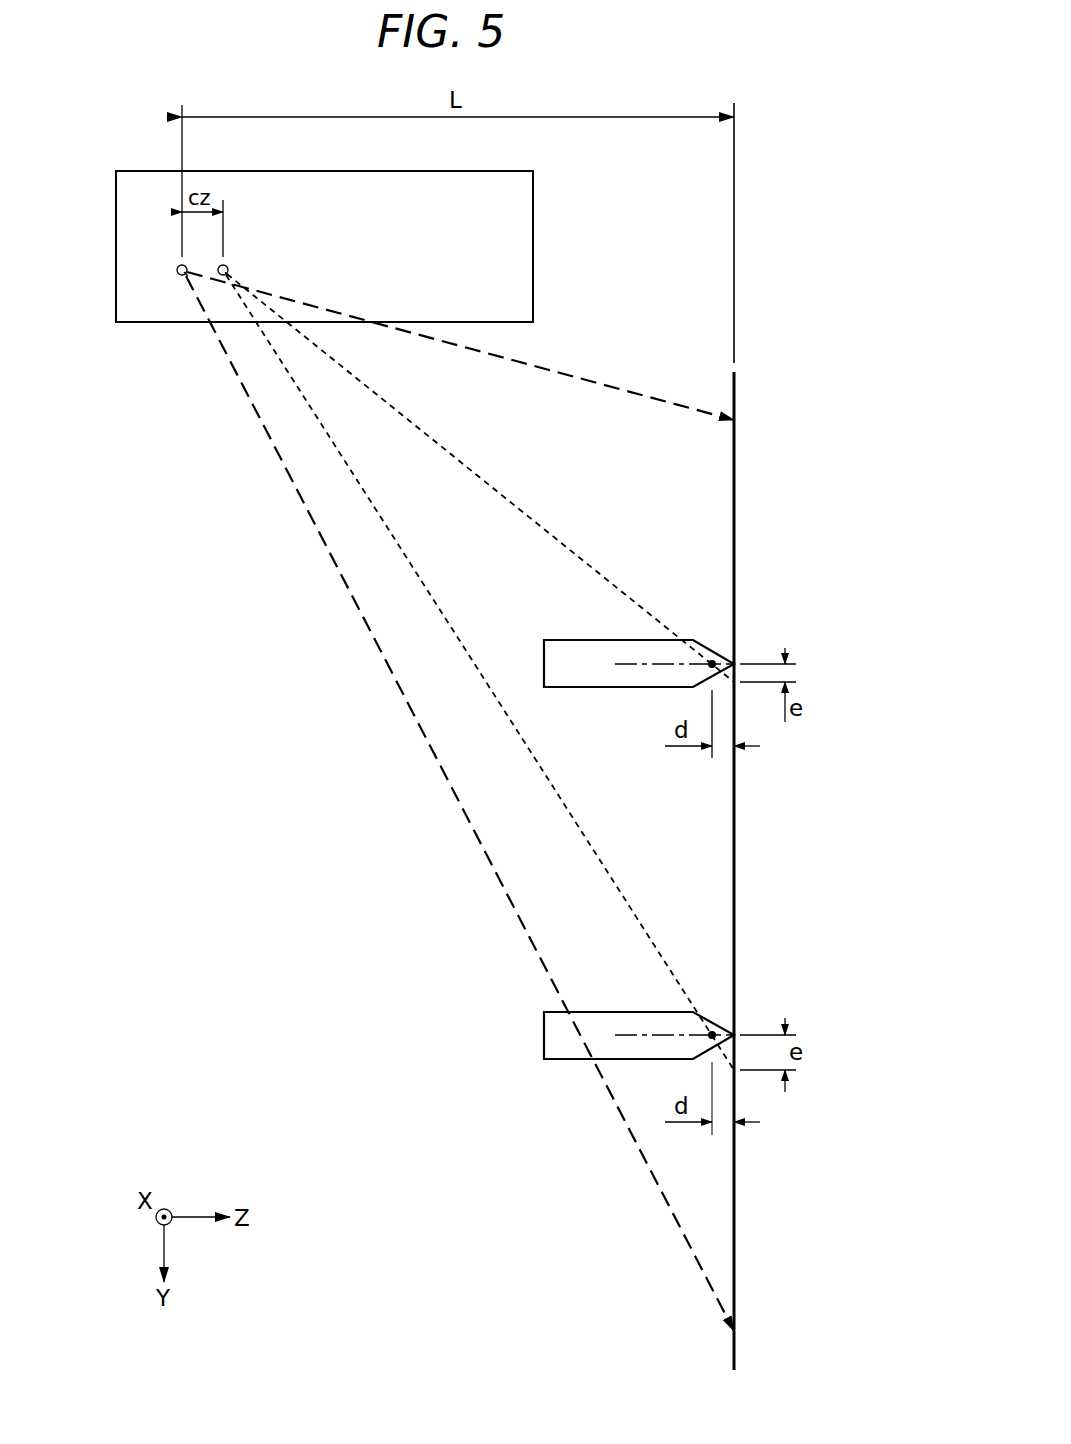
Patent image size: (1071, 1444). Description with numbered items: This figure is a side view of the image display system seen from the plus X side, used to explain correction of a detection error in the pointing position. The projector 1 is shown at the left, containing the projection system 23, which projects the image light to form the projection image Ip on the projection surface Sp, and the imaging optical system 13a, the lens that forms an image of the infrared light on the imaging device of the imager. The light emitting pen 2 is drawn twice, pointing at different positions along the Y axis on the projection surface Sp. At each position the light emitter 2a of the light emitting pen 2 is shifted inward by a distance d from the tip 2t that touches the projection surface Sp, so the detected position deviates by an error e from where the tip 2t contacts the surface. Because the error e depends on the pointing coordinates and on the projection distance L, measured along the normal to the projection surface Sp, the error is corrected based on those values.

The projector 1 is at (121, 177).
The projection system 23 is at (181, 264).
The imaging optical system 13a is at (225, 264).
The light emitting pen 2 is at (570, 648).
The light emitter 2a is at (712, 660).
The tip 2t is at (735, 663).
The projection surface Sp is at (733, 393).
The projection image Ip is at (733, 486).